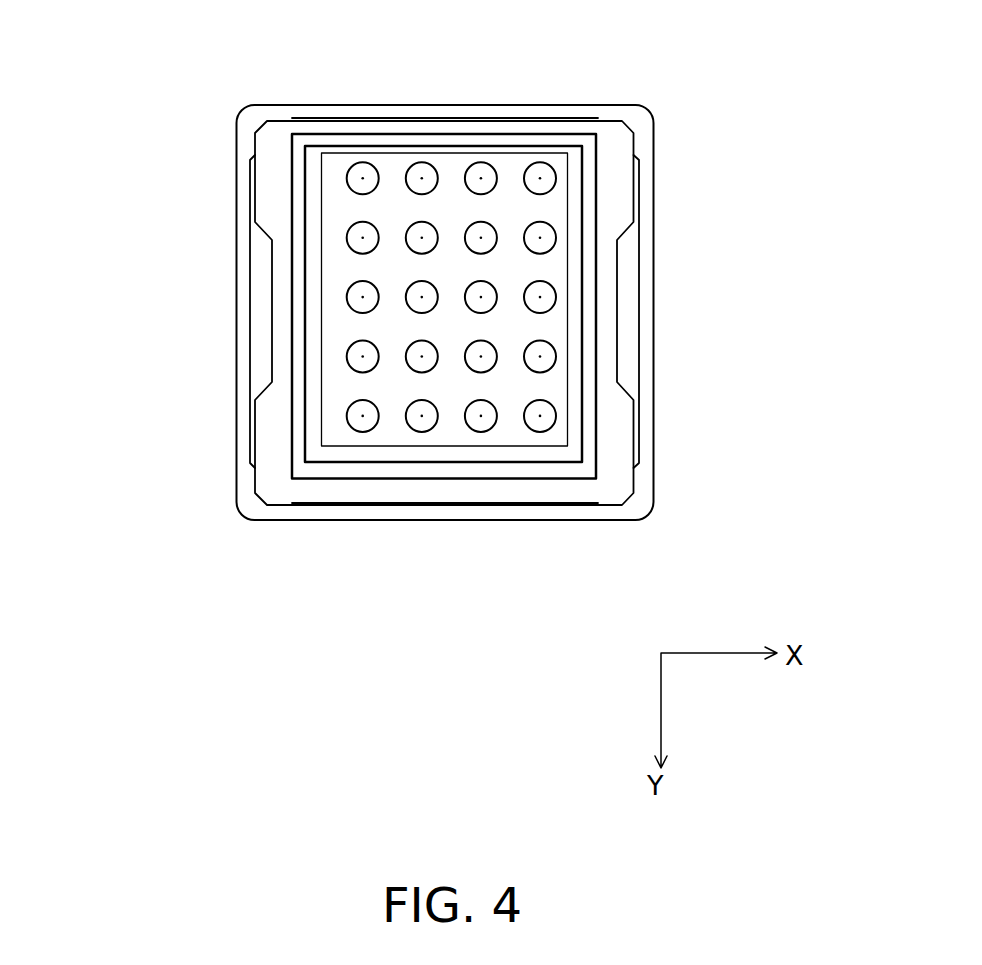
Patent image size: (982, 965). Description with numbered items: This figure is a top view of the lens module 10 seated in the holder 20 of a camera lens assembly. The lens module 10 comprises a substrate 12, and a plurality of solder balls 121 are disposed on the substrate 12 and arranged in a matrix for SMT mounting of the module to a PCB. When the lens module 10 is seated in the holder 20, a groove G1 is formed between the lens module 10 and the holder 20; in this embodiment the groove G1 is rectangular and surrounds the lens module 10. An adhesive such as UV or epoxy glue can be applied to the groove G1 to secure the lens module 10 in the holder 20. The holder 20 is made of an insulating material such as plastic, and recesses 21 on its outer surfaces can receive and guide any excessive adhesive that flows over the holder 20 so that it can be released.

The lens module 10 is at (349, 244).
The substrate 12 is at (313, 210).
The solder balls 121 is at (363, 355).
The holder 20 is at (647, 108).
The recesses 21 is at (618, 313).
The groove G1 is at (395, 142).